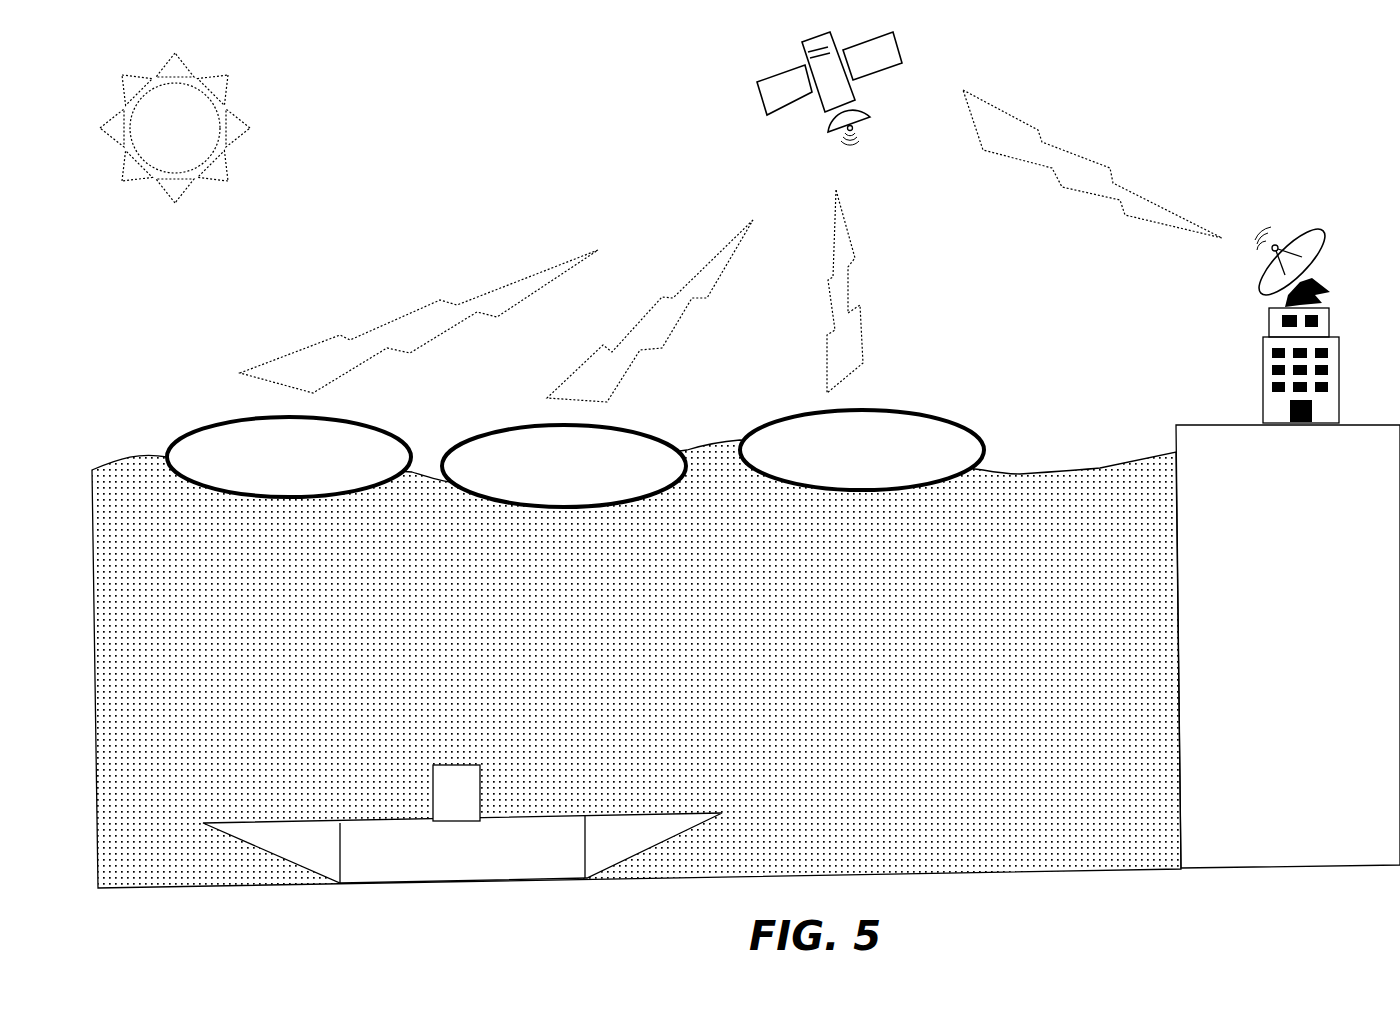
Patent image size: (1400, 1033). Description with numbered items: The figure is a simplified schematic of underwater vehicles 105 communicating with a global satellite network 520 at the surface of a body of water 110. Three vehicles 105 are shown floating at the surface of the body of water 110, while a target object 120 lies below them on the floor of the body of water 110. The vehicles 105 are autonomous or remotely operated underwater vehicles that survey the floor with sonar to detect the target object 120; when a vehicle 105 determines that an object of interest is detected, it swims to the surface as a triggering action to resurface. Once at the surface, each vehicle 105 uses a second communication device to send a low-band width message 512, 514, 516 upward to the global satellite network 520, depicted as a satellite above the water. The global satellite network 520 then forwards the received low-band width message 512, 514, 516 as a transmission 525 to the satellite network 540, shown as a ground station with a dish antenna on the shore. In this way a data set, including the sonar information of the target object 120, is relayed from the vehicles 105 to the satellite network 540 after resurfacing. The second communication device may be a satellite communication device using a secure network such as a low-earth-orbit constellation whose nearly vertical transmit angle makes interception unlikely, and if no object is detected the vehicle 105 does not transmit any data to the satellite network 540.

The vehicles 105 is at (193, 432).
The body of water 110 is at (160, 504).
The target object 120 is at (577, 820).
The low-band width message 512 is at (400, 320).
The low-band width message 514 is at (707, 267).
The low-band width message 516 is at (850, 283).
The global satellite network 520 is at (757, 82).
The transmission 525 is at (1080, 158).
The satellite network 540 is at (1328, 253).